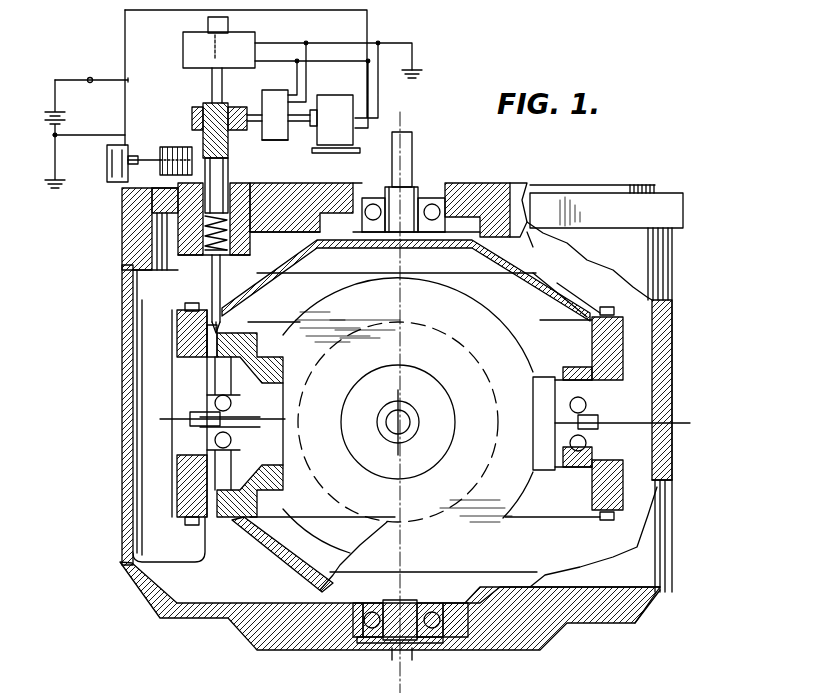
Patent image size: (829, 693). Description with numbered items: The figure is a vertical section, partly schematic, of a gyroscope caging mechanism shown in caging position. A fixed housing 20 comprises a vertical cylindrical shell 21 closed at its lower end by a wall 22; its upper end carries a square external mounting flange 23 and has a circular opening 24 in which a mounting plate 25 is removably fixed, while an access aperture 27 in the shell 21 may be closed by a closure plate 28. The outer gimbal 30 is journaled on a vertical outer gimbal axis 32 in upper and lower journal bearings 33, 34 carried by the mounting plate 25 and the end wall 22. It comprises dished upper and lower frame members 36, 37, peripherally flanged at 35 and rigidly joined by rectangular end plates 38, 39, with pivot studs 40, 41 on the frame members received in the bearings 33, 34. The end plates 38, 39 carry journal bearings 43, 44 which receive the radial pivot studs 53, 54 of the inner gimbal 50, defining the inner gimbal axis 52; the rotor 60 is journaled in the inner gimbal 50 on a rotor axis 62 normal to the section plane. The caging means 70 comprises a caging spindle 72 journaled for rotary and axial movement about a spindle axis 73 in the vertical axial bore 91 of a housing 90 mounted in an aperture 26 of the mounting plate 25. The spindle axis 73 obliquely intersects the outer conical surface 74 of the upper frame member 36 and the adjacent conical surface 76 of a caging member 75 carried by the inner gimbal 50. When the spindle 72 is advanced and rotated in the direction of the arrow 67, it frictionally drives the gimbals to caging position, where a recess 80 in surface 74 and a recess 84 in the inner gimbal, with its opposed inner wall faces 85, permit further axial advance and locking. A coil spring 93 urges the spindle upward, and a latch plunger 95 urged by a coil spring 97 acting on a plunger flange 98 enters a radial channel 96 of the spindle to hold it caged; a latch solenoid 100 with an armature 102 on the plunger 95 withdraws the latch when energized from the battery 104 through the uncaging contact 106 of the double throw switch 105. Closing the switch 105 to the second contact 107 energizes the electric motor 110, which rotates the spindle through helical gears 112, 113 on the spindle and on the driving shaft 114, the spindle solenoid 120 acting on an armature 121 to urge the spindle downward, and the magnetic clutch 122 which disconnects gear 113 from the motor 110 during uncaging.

The fixed housing 20 is at (680, 273).
The vertical cylindrical shell 21 is at (664, 370).
The lower end wall 22 is at (312, 647).
The square external mounting flange 23 is at (665, 213).
The circular opening 24 is at (150, 197).
The mounting plate 25 is at (498, 190).
The aperture 26 is at (262, 180).
The access aperture 27 is at (124, 558).
The closure plate 28 is at (121, 463).
The outer gimbal 30 is at (574, 293).
The outer gimbal axis 32 is at (402, 130).
The upper journal bearing 33 is at (438, 196).
The lower journal bearing 34 is at (450, 645).
The peripheral flange 35 is at (184, 318).
The upper frame member 36 is at (530, 282).
The lower frame member 37 is at (246, 554).
The end plate 38 is at (178, 342).
The end plate 39 is at (620, 334).
The pivot stud 40 is at (412, 190).
The pivot stud 41 is at (392, 642).
The journal bearing 43 is at (207, 396).
The journal bearing 44 is at (590, 400).
The inner gimbal 50 is at (534, 306).
The inner gimbal axis 52 is at (160, 419).
The radial pivot stud 53 is at (192, 428).
The radial pivot stud 54 is at (598, 420).
The gyroscope rotor 60 is at (445, 334).
The rotor axis 62 is at (403, 418).
The arrow 67 is at (204, 283).
The caging means 70 is at (140, 232).
The caging spindle 72 is at (199, 296).
The spindle axis 73 is at (252, 222).
The outer conical surface 74 is at (580, 309).
The caging member 75 is at (250, 338).
The conical surface 76 is at (230, 522).
The recess 80 is at (222, 290).
The recess 84 is at (240, 320).
The opposed inner wall faces 85 is at (241, 334).
The housing 90 is at (283, 260).
The vertical axial bore 91 is at (230, 250).
The coil spring 93 is at (232, 238).
The plunger 95 is at (153, 156).
The radial channel 96 is at (230, 168).
The coil spring 97 is at (164, 146).
The plunger flange 98 is at (182, 146).
The latch solenoid 100 is at (112, 182).
The armature 102 is at (138, 152).
The battery 104 is at (62, 120).
The double throw control switch 105 is at (93, 66).
The uncaging contact 106 is at (130, 96).
The second contact 107 is at (128, 70).
The electric motor 110 is at (330, 97).
The helical gear 112 is at (203, 105).
The helical gear 113 is at (240, 107).
The driving shaft 114 is at (262, 92).
The spindle solenoid 120 is at (248, 37).
The armature 121 is at (208, 24).
The magnetic clutch 122 is at (290, 150).